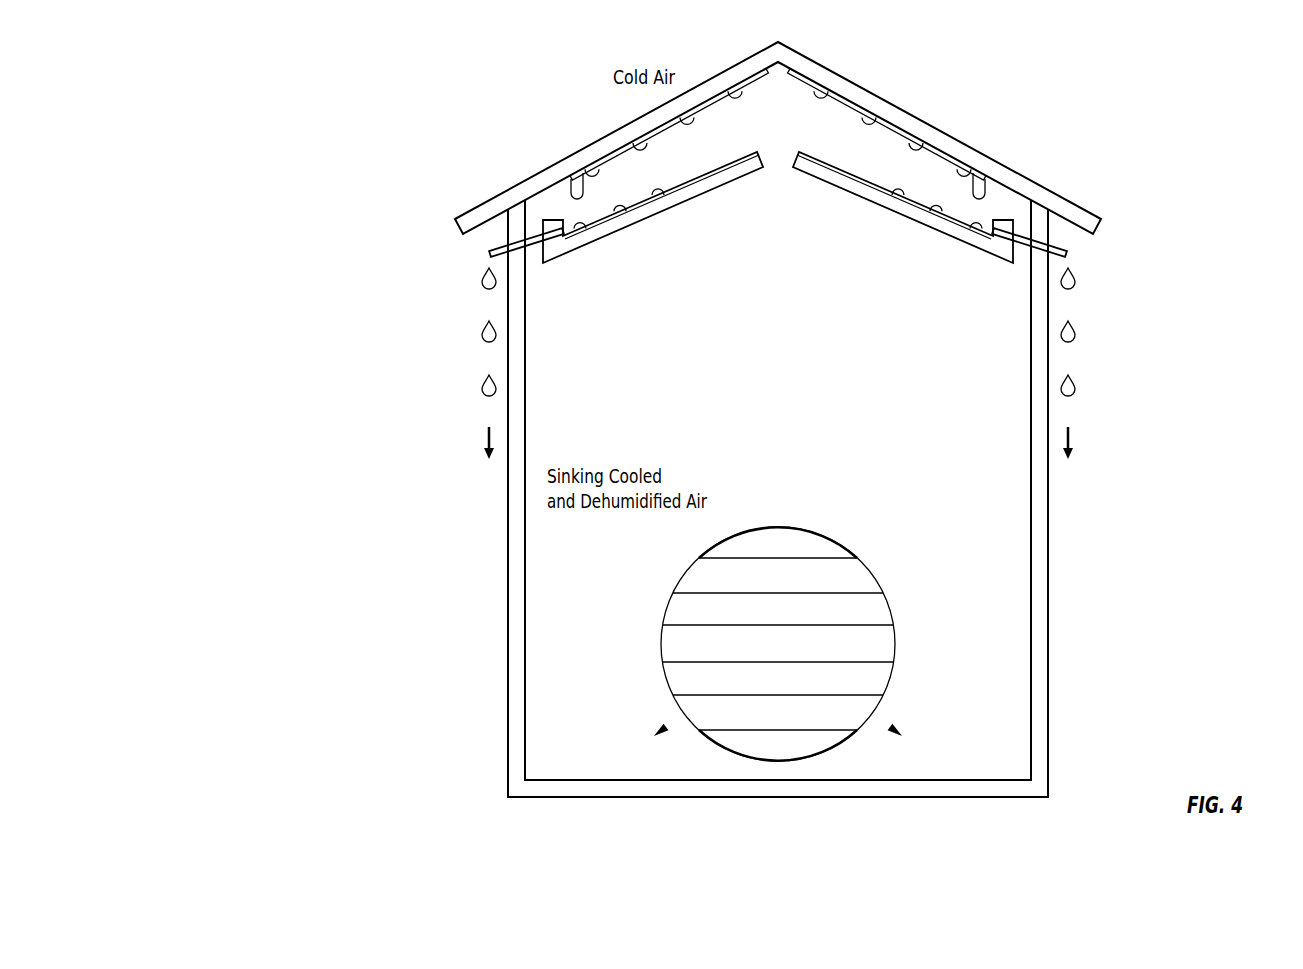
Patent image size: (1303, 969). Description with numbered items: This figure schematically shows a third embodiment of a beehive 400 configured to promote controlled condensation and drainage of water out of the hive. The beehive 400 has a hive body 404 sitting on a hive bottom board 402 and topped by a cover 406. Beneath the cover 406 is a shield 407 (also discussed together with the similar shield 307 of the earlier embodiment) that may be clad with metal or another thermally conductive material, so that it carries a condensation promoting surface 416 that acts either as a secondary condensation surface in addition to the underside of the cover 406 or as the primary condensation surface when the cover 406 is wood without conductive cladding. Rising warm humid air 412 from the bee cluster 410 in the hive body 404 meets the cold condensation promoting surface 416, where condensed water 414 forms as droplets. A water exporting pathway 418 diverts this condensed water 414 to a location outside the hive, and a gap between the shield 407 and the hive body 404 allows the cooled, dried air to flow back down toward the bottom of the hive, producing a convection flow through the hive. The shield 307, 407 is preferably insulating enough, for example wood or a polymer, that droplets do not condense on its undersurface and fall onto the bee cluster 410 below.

The beehive 400 is at (808, 38).
The hive bottom board 402 is at (488, 787).
The hive body 404 is at (488, 550).
The cover 406 is at (446, 210).
The shield 407 is at (768, 173).
The bee cluster 410 is at (868, 655).
The rising warm humid air 412 is at (882, 308).
The condensed water 414 is at (705, 144).
The condensation promoting surface 416 is at (628, 153).
The water exporting pathway 418 is at (468, 252).
The shield 307 is at (574, 216).